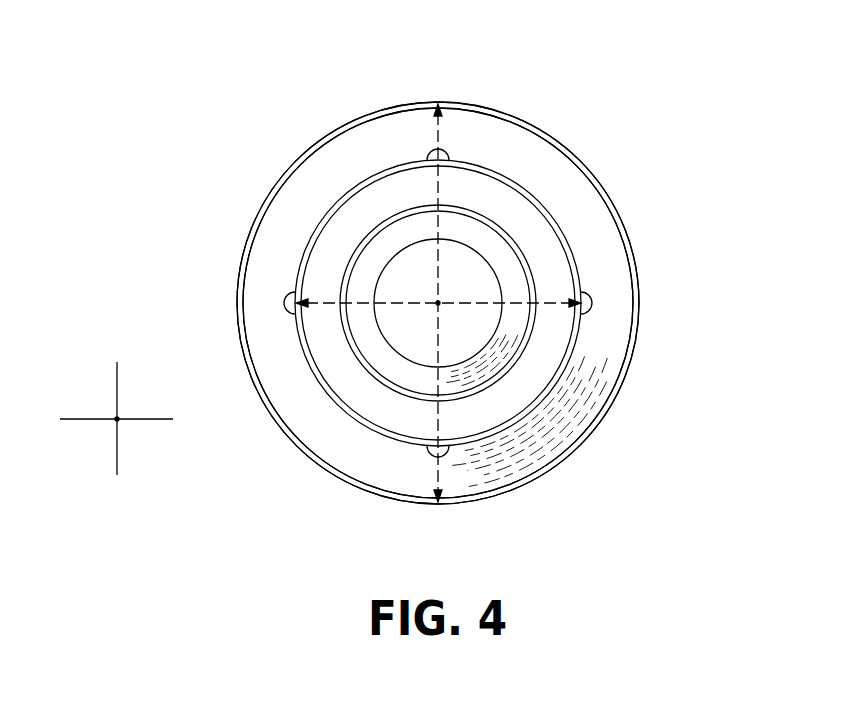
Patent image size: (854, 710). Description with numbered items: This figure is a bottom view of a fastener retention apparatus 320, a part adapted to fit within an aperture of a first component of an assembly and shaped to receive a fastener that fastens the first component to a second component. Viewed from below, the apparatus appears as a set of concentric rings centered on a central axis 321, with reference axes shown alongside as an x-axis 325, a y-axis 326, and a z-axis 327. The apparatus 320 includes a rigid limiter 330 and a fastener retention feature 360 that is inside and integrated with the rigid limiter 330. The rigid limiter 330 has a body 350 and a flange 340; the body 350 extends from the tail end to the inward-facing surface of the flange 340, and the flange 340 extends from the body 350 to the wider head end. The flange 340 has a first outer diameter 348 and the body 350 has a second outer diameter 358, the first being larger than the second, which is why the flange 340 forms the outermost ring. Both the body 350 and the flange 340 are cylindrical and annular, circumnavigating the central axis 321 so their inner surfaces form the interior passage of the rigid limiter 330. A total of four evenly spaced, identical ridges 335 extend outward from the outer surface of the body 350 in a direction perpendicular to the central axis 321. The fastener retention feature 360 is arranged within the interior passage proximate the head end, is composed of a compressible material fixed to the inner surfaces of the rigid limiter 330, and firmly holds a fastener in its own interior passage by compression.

The fastener retention apparatus 320 is at (126, 69).
The central axis 321 is at (446, 296).
The x-axis 325 is at (117, 373).
The y-axis 326 is at (152, 420).
The z-axis 327 is at (119, 418).
The rigid limiter 330 is at (512, 180).
The ridges 335 is at (590, 293).
The flange 340 is at (565, 200).
The first outer diameter 348 is at (460, 110).
The body 350 is at (540, 247).
The second outer diameter 358 is at (461, 307).
The fastener retention feature 360 is at (520, 293).